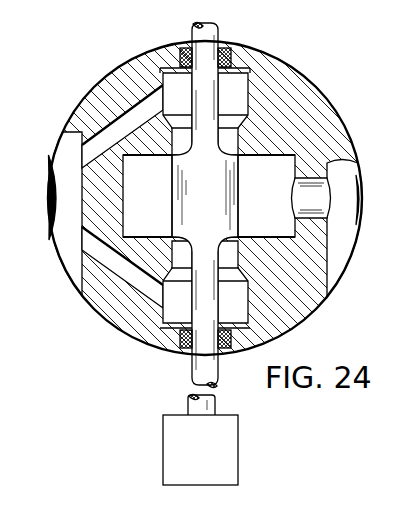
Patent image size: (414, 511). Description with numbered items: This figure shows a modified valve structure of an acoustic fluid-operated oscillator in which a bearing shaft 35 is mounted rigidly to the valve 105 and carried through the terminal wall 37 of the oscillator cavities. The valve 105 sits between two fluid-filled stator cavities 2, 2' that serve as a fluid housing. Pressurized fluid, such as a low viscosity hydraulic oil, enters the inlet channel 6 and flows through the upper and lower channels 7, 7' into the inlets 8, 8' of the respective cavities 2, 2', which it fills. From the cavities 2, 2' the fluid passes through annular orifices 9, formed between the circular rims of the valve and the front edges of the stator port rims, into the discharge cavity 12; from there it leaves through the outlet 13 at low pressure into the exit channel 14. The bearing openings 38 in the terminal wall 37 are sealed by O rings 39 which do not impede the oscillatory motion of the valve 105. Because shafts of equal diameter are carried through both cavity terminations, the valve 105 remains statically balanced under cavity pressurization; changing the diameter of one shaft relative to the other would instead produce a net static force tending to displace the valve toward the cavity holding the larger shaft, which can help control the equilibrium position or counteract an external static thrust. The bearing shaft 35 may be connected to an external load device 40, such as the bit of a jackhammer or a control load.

The stator cavity 2 is at (233, 114).
The stator cavity 2' is at (212, 284).
The inlet channel 6 is at (65, 214).
The upper channel 7 is at (115, 127).
The lower channel 7' is at (115, 266).
The inlet 8 is at (175, 114).
The inlet 8' is at (174, 284).
The annular orifice 9 is at (173, 158).
The discharge cavity 12 is at (209, 196).
The outlet 13 is at (311, 198).
The exit channel 14 is at (344, 228).
The bearing shaft 35 is at (200, 27).
The terminal wall 37 is at (227, 73).
The bearing opening 38 is at (214, 303).
The O ring 39 is at (226, 50).
The external load device 40 is at (230, 448).
The valve 105 is at (223, 190).